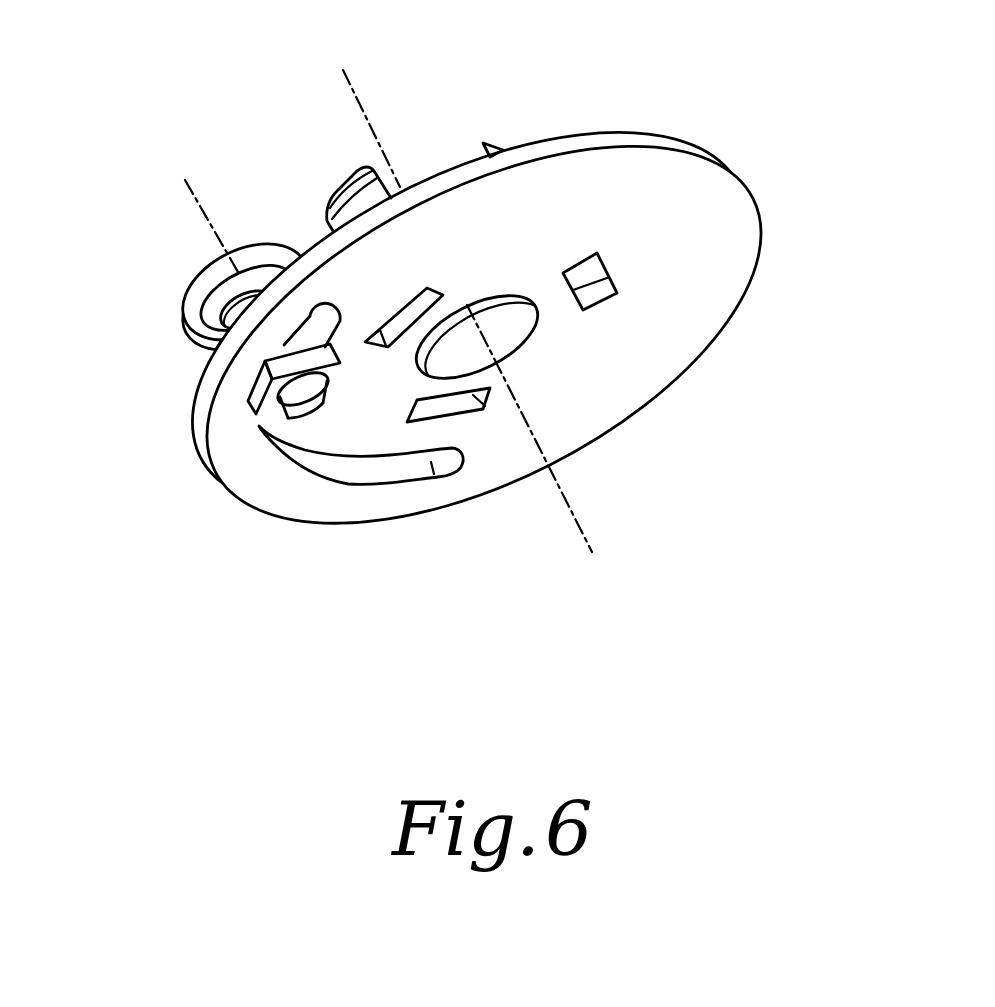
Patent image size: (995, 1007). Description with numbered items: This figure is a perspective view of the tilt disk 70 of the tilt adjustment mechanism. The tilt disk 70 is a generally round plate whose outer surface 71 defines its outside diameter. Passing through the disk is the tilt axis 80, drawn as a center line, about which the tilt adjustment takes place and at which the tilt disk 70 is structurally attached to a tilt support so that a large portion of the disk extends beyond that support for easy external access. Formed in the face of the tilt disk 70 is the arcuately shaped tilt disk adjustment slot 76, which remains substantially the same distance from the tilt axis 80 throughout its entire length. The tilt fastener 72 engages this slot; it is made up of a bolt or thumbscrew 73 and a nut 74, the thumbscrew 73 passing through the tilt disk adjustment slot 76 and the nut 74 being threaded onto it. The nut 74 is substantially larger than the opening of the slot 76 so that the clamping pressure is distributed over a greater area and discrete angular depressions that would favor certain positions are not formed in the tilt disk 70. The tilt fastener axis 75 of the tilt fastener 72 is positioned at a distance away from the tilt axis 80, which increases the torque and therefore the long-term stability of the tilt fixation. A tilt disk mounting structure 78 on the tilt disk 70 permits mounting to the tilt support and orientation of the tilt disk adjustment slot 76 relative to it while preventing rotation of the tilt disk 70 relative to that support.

The tilt disk 70 is at (692, 200).
The outer surface 71 is at (570, 138).
The tilt fastener 72 is at (173, 322).
The thumbscrew 73 is at (200, 334).
The nut 74 is at (250, 415).
The tilt fastener axis 75 is at (200, 200).
The tilt disk adjustment slot 76 is at (382, 478).
The tilt disk mounting structure 78 is at (373, 168).
The tilt axis 80 is at (583, 533).